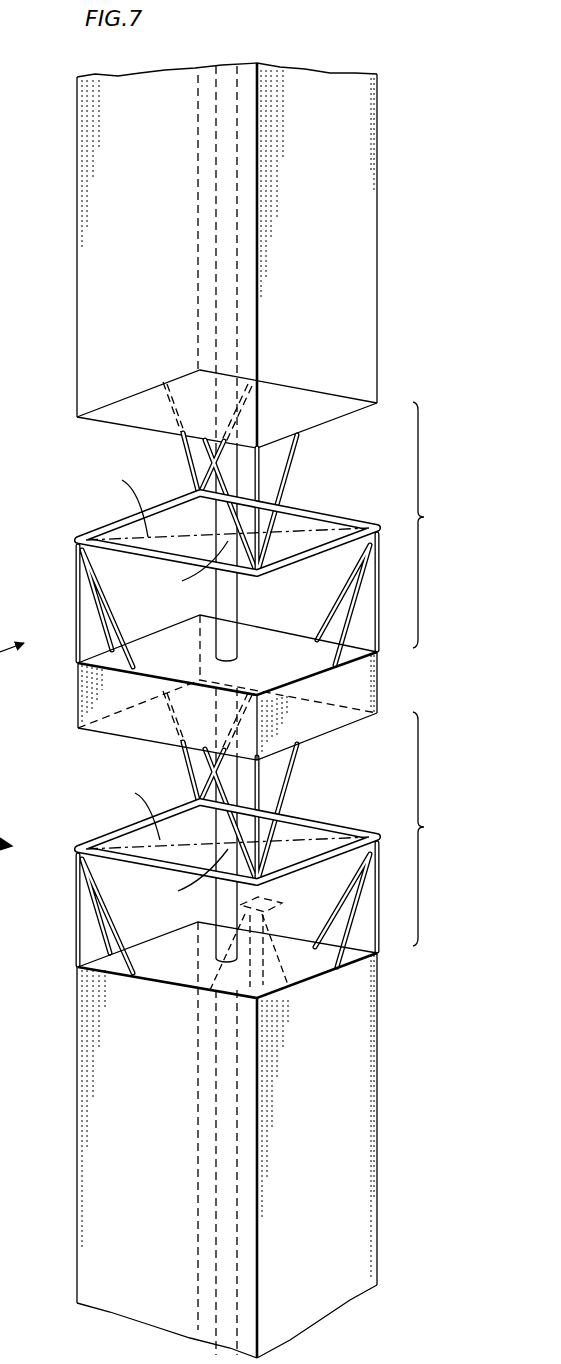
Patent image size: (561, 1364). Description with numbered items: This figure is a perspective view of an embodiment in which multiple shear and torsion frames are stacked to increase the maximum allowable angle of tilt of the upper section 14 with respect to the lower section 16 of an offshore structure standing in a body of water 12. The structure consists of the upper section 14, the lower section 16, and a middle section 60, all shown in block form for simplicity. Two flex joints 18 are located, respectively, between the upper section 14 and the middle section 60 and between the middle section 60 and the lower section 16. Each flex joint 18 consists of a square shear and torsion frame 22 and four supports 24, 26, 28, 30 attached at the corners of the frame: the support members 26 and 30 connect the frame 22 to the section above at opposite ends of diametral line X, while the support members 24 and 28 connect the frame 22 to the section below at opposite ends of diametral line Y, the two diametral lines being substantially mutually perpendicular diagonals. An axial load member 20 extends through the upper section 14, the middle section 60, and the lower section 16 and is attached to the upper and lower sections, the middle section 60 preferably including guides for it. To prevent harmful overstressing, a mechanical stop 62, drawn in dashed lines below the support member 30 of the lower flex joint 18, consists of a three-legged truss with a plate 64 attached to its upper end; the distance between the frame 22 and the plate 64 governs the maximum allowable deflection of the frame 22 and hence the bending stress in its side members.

The body of water 12 is at (50, 284).
The upper section 14 is at (380, 167).
The lower section 16 is at (77, 1153).
The flex joint 18 is at (434, 674).
The axial load member 20 is at (240, 646).
The shear and torsion frame 22 is at (106, 518).
The support member 24 is at (71, 561).
The support member 26 is at (184, 480).
The support member 28 is at (384, 541).
The support member 30 is at (275, 543).
The middle section 60 is at (76, 697).
The mechanical stop 62 is at (291, 957).
The plate 64 is at (284, 905).